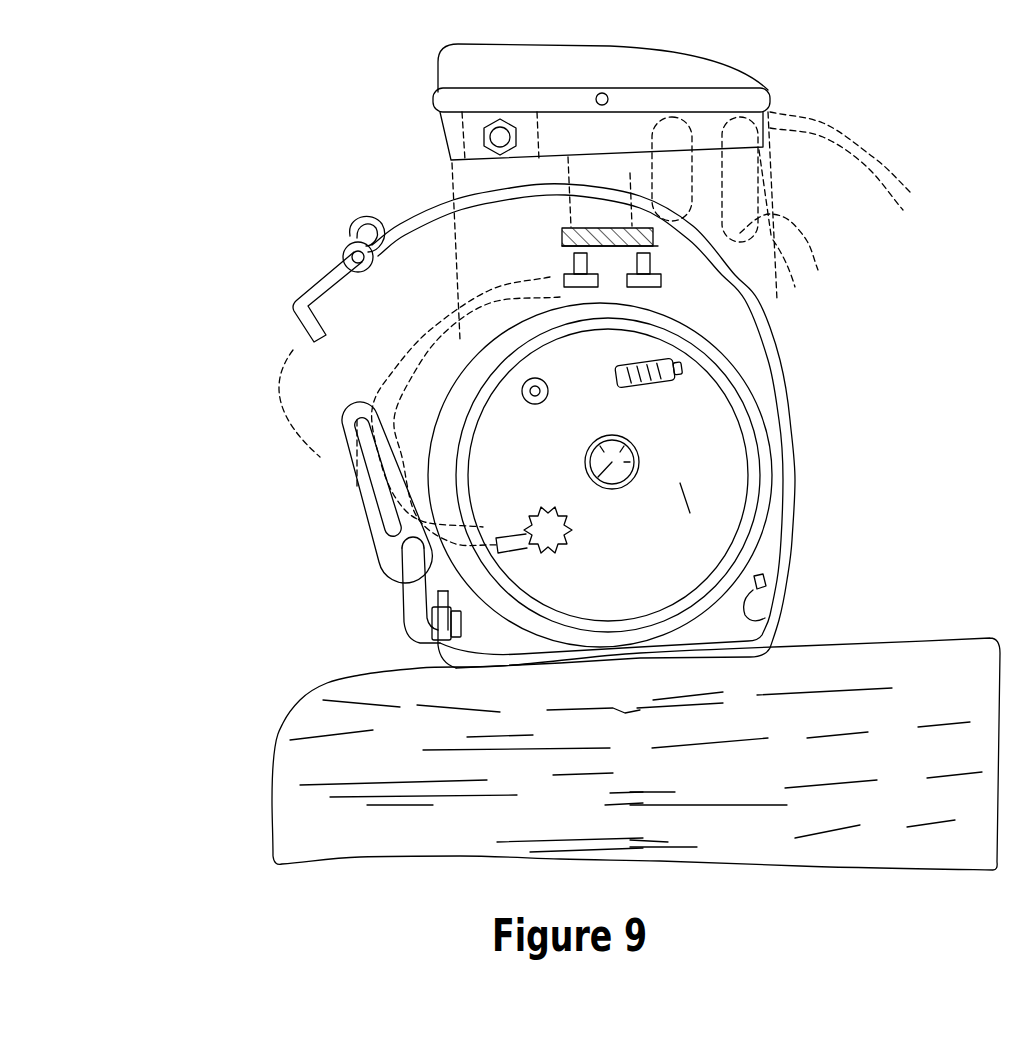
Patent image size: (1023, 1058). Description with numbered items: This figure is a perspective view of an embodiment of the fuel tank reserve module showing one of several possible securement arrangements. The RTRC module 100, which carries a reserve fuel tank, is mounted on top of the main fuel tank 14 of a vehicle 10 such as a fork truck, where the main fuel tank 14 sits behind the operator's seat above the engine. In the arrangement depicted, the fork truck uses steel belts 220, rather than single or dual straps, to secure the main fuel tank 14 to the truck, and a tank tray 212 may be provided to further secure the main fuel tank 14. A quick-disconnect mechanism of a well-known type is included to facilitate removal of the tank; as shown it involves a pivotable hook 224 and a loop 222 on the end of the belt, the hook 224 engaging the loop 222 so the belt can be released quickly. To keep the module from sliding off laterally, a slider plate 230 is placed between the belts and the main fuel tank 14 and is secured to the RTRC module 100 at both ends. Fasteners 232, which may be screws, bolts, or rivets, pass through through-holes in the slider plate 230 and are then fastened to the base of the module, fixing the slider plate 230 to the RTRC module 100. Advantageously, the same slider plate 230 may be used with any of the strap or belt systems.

The vehicle 10 is at (268, 776).
The main fuel tank 14 is at (700, 496).
The RTRC module 100 is at (437, 97).
The tank tray 212 is at (440, 646).
The steel belts 220 is at (293, 320).
The loop 222 is at (313, 281).
The pivotable hook 224 is at (372, 480).
The slider plate 230 is at (557, 239).
The fasteners 232 is at (670, 269).